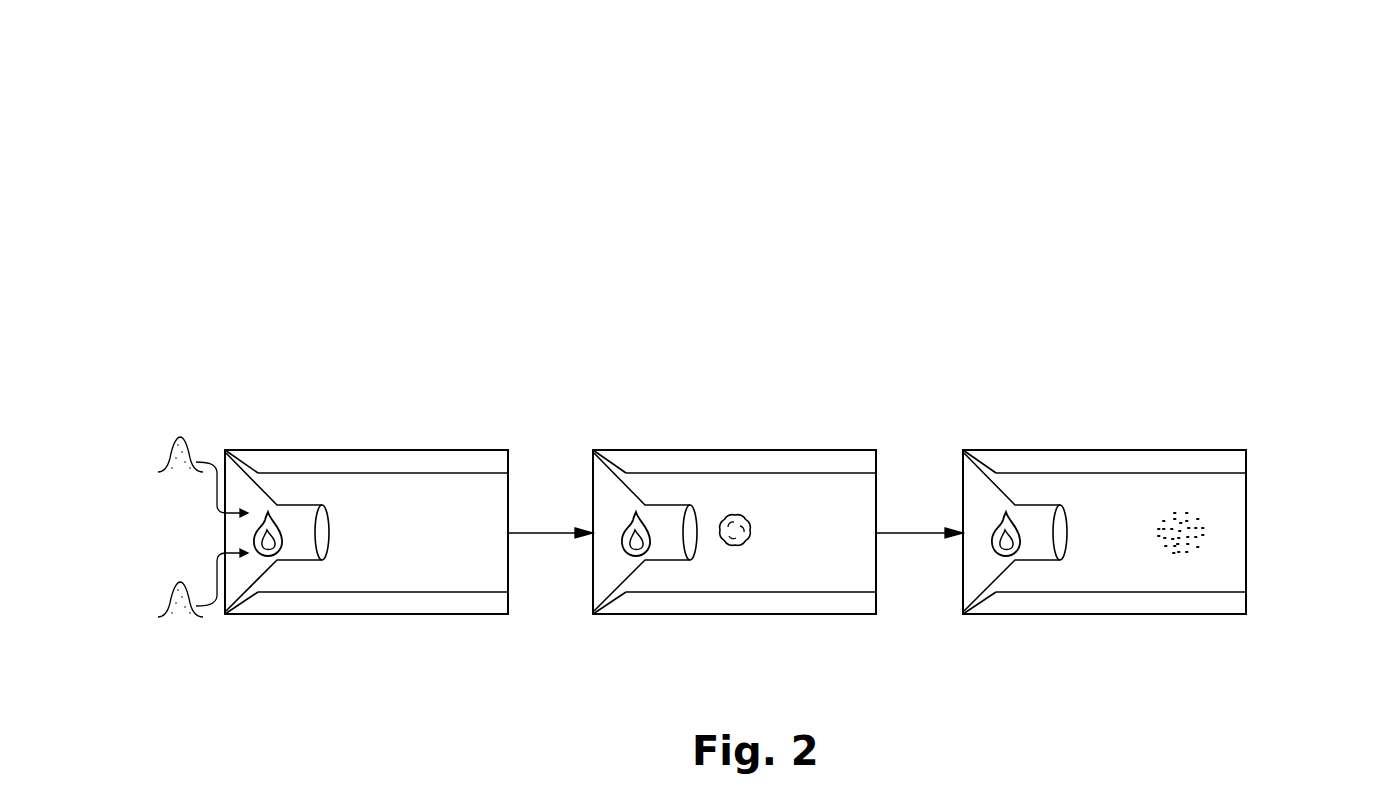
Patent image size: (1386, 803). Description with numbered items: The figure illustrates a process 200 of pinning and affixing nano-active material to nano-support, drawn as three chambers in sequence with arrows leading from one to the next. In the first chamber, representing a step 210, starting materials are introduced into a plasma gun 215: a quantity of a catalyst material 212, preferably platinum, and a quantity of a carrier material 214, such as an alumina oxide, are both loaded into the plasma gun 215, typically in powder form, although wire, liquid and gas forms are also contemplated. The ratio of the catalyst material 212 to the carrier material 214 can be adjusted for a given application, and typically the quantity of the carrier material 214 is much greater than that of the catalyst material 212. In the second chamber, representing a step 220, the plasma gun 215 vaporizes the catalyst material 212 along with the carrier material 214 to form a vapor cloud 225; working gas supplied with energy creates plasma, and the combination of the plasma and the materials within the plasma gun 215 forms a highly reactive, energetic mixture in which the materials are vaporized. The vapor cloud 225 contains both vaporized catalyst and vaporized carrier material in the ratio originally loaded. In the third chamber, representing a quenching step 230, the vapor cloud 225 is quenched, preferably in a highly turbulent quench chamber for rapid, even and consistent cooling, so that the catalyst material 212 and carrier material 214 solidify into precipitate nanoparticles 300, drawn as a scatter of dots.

The process 200 is at (1282, 138).
The step 210 is at (470, 450).
The catalyst material 212 is at (172, 441).
The carrier material 214 is at (172, 586).
The plasma gun 215 is at (292, 505).
The step 220 is at (835, 450).
The vapor cloud 225 is at (753, 547).
The quenching step 230 is at (1208, 450).
The nanoparticles 300 is at (1163, 558).